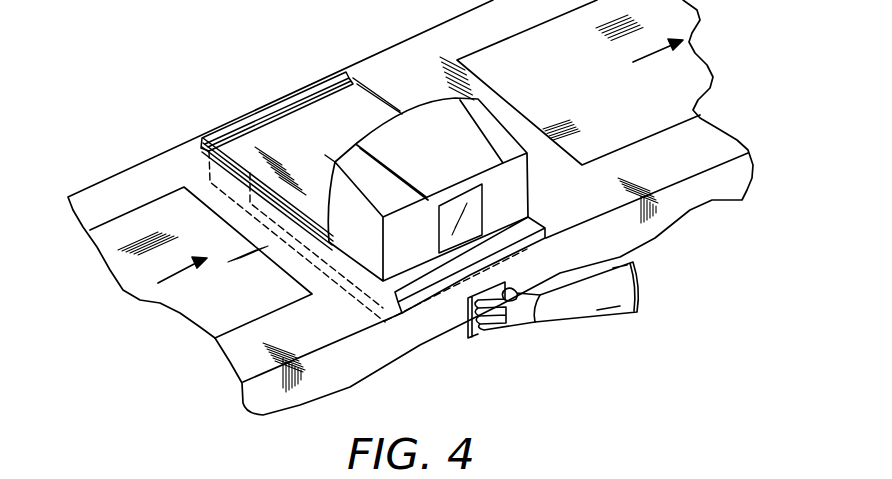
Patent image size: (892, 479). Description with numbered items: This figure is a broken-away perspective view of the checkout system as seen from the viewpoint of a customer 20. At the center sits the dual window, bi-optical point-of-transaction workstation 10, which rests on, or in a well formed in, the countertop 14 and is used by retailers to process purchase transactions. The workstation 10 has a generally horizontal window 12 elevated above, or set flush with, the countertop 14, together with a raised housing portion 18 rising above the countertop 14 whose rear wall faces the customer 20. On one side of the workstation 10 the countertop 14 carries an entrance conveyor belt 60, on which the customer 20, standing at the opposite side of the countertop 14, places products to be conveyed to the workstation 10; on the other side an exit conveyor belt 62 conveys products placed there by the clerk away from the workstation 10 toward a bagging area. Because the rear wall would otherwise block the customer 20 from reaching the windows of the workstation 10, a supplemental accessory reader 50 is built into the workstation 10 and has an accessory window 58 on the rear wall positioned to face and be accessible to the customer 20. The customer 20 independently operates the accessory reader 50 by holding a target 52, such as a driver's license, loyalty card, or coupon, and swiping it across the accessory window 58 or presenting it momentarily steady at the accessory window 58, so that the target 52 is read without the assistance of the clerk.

The point-of-transaction workstation 10 is at (404, 104).
The horizontal window 12 is at (328, 160).
The countertop 14 is at (660, 172).
The raised housing portion 18 is at (332, 212).
The customer 20 is at (627, 288).
The accessory reader 50 is at (450, 189).
The target 52 is at (493, 328).
The accessory window 58 is at (439, 229).
The entrance conveyor belt 60 is at (250, 300).
The exit conveyor belt 62 is at (627, 124).